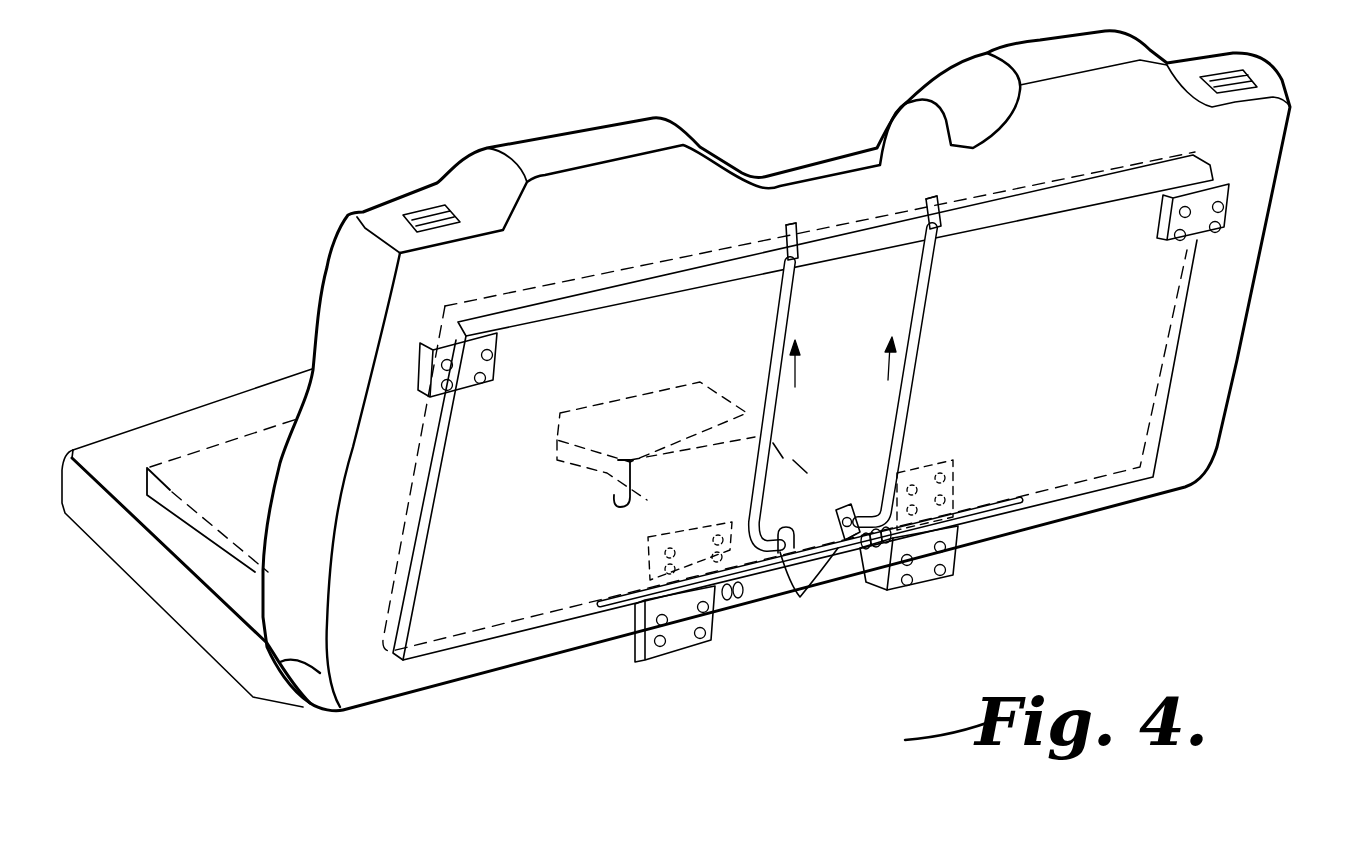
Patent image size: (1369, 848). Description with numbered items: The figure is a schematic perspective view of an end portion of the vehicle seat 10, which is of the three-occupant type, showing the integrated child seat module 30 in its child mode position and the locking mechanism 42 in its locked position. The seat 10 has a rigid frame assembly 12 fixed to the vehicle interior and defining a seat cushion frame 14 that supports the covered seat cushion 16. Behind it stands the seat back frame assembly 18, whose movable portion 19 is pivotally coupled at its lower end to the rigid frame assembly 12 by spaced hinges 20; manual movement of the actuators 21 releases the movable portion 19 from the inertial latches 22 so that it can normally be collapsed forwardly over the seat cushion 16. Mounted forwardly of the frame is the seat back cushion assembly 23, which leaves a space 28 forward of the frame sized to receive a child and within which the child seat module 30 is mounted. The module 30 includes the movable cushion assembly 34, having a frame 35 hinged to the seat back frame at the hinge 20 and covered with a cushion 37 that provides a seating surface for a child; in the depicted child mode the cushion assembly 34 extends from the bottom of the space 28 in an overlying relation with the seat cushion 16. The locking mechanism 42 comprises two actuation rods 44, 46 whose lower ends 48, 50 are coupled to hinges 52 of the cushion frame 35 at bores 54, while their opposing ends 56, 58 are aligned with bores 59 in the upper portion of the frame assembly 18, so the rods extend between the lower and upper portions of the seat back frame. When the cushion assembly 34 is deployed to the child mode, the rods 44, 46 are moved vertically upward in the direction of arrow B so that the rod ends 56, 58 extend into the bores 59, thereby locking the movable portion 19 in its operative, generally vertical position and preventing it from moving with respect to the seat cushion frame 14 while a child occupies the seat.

The vehicle seat 10 is at (285, 299).
The rigid frame assembly 12 is at (170, 630).
The seat cushion frame 14 is at (218, 473).
The seat cushion 16 is at (97, 463).
The seat back frame assembly 18 is at (1192, 372).
The movable portion 19 is at (1068, 370).
The hinges 20 is at (683, 662).
The actuators 21 is at (453, 223).
The inertial latches 22 is at (506, 372).
The seat back cushion assembly 23 is at (1333, 92).
The space 28 is at (823, 168).
The child seat module 30 is at (828, 481).
The movable cushion assembly 34 is at (582, 484).
The frame 35 is at (780, 463).
The cushion 37 is at (560, 433).
The locking mechanism 42 is at (838, 390).
The actuation rod 44 is at (752, 472).
The actuation rod 46 is at (901, 414).
The rod end 48 is at (760, 556).
The rod end 50 is at (895, 540).
The hinges 52 is at (801, 599).
The bores 54 is at (834, 518).
The rod end 56 is at (804, 245).
The rod end 58 is at (915, 198).
The bores 59 is at (785, 253).
The arrow B is at (807, 371).